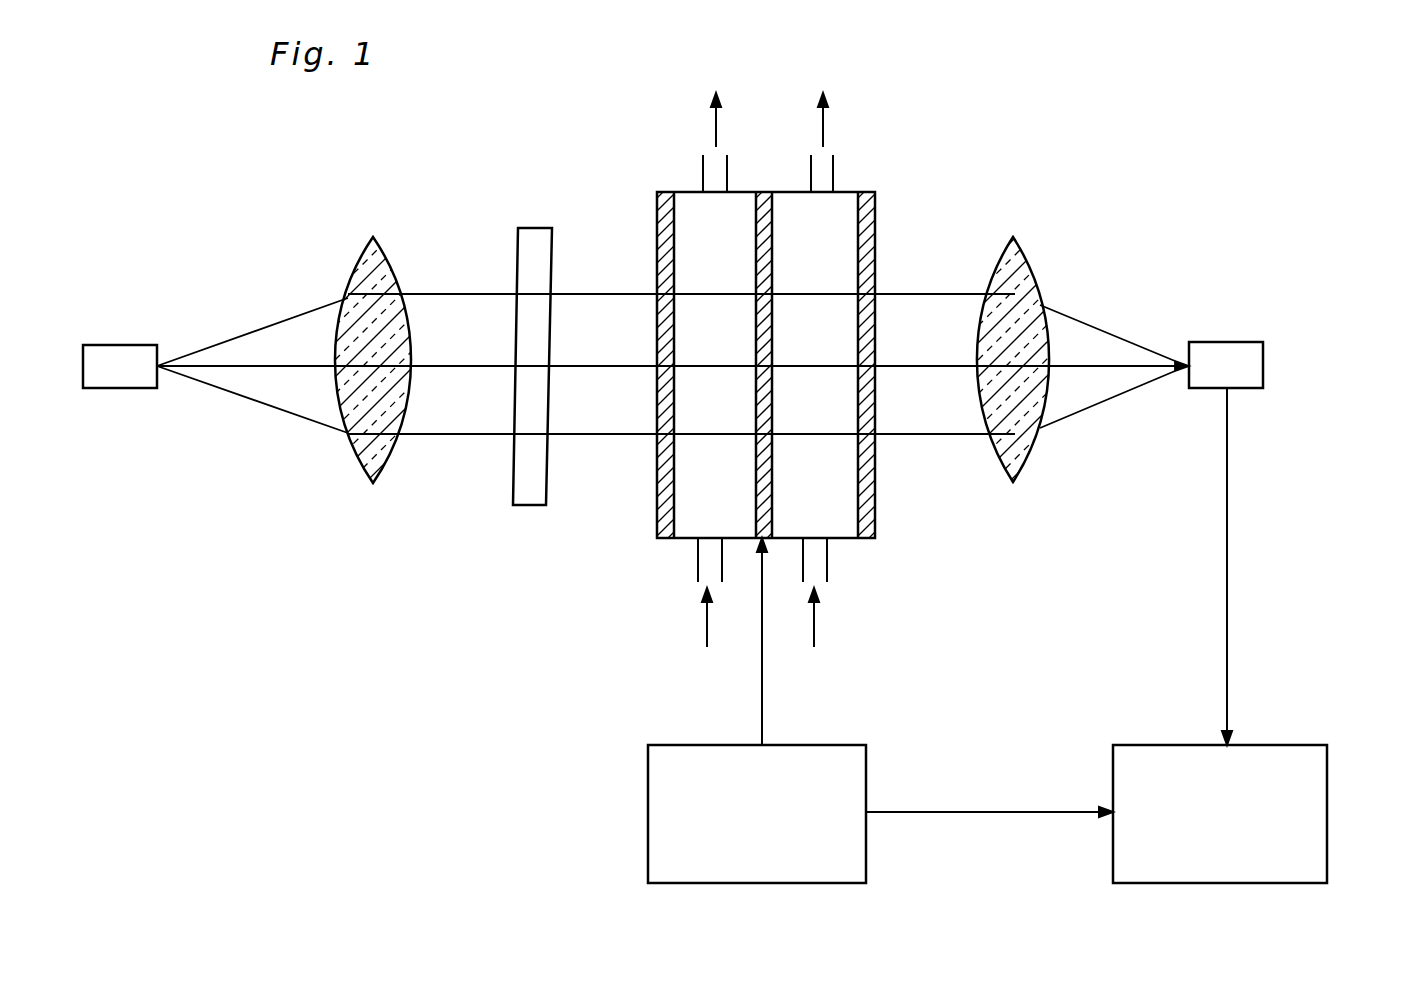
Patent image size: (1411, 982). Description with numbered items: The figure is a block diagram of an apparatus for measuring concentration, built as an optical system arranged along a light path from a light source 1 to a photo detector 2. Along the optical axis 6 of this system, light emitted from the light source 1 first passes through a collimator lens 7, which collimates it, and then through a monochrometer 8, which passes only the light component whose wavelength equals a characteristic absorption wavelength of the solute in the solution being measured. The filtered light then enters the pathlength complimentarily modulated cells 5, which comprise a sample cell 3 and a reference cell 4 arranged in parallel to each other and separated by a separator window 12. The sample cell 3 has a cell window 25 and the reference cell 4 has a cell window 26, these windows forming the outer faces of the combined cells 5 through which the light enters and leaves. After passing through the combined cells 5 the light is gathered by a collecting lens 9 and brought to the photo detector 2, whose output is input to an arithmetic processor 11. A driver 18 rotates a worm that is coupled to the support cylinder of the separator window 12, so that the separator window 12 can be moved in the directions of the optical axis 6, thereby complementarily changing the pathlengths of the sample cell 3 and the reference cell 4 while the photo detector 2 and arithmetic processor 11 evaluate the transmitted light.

The light source 1 is at (127, 388).
The photo detector 2 is at (1265, 365).
The sample cell 3 is at (724, 239).
The reference cell 4 is at (825, 239).
The pathlength complimentarily modulated cells 5 is at (636, 506).
The optical axis 6 is at (292, 368).
The collimator lens 7 is at (376, 241).
The monochrometer 8 is at (553, 240).
The collecting lens 9 is at (1032, 258).
The arithmetic processor 11 is at (1328, 811).
The separator window 12 is at (758, 220).
The driver 18 is at (866, 779).
The cell window 25 is at (655, 468).
The cell window 26 is at (875, 482).